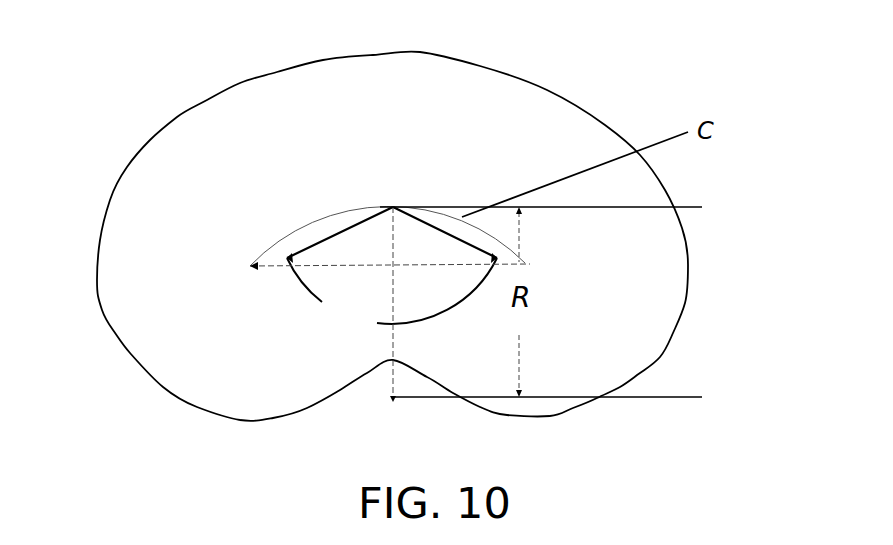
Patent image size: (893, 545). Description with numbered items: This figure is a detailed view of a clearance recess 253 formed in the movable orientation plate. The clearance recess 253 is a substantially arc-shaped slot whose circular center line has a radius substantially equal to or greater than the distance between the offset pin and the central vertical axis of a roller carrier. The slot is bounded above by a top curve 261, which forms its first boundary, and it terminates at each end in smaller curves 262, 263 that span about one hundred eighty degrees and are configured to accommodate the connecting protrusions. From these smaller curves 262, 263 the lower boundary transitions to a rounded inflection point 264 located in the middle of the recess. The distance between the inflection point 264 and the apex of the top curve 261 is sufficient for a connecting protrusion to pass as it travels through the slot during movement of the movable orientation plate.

The clearance recess 253 is at (390, 266).
The top curve 261 is at (425, 53).
The smaller curve 262 is at (673, 330).
The smaller curve 263 is at (102, 302).
The inflection point 264 is at (379, 362).